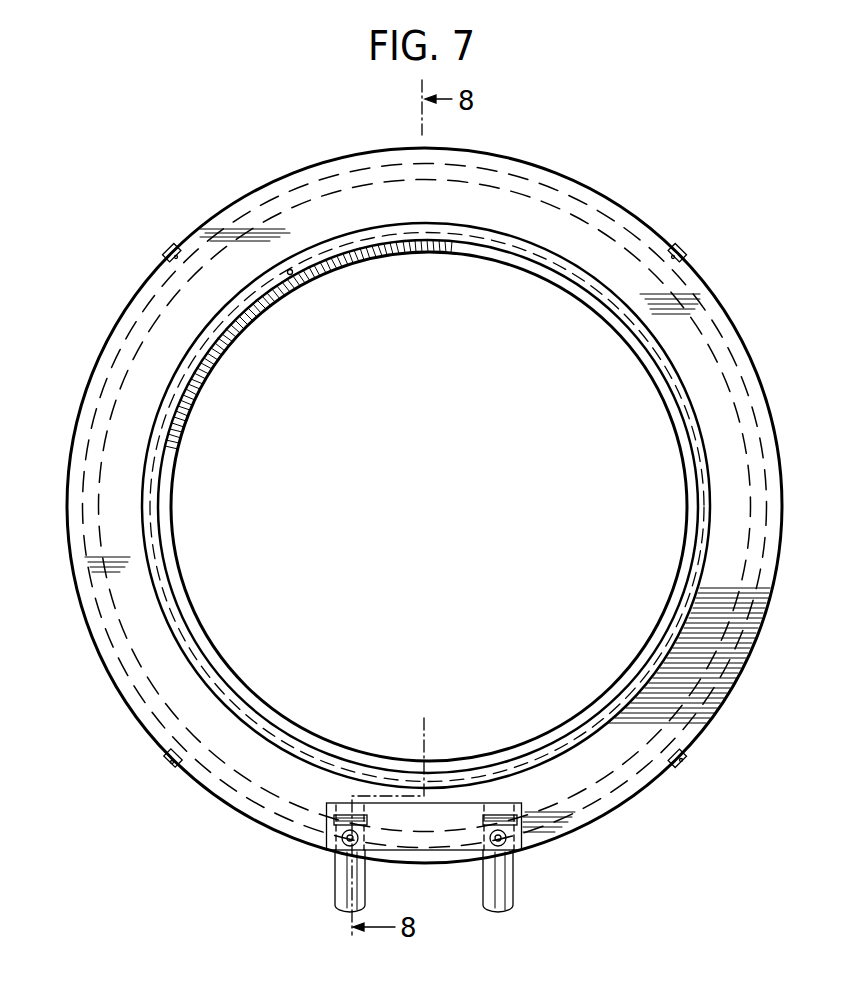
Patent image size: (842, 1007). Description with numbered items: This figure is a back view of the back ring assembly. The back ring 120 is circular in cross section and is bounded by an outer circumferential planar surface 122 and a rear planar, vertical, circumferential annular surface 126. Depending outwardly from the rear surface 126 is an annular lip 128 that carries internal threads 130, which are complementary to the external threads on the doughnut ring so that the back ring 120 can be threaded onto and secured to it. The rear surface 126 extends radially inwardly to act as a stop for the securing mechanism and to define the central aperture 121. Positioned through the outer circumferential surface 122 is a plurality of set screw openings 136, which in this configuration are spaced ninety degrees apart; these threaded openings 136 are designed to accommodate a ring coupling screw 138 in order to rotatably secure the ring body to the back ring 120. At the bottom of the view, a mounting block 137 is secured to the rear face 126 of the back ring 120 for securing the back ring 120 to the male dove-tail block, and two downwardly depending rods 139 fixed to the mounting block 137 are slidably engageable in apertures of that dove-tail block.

The back ring 120 is at (620, 210).
The aperture 121 is at (312, 275).
The outer circumferential planar surface 122 is at (752, 662).
The rear planar vertical circumferential annular surface 126 is at (530, 205).
The annular lip 128 is at (333, 233).
The internal threads 130 is at (290, 272).
The set screw openings 136 is at (162, 250).
The mounting block 137 is at (320, 815).
The ring coupling screw 138 is at (176, 256).
The downwardly depending rods 139 is at (343, 880).